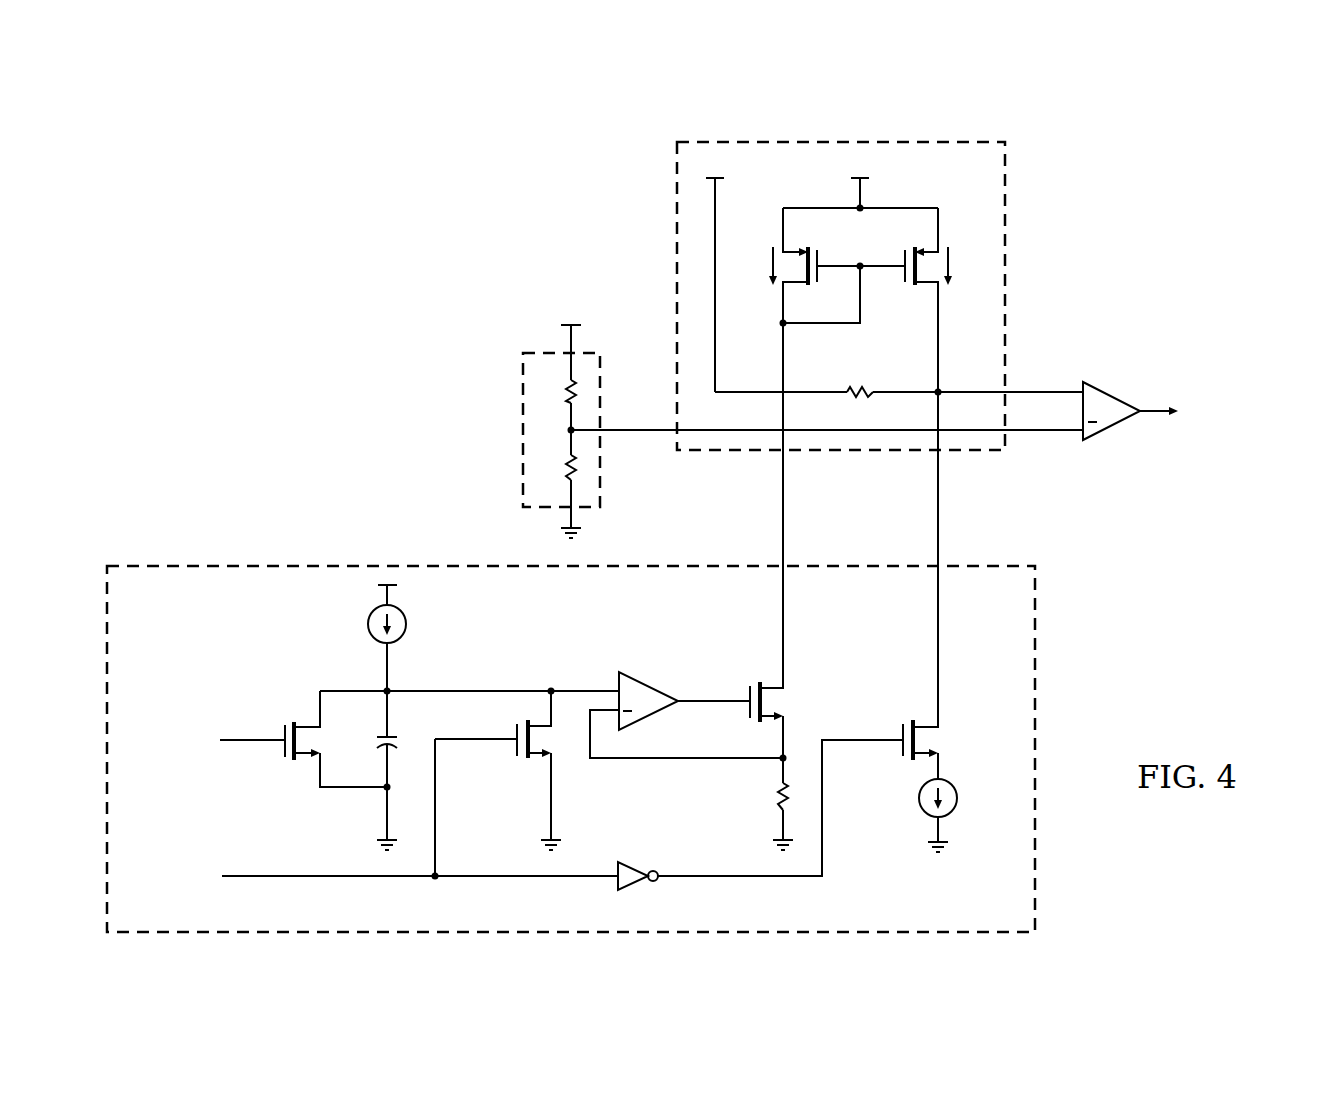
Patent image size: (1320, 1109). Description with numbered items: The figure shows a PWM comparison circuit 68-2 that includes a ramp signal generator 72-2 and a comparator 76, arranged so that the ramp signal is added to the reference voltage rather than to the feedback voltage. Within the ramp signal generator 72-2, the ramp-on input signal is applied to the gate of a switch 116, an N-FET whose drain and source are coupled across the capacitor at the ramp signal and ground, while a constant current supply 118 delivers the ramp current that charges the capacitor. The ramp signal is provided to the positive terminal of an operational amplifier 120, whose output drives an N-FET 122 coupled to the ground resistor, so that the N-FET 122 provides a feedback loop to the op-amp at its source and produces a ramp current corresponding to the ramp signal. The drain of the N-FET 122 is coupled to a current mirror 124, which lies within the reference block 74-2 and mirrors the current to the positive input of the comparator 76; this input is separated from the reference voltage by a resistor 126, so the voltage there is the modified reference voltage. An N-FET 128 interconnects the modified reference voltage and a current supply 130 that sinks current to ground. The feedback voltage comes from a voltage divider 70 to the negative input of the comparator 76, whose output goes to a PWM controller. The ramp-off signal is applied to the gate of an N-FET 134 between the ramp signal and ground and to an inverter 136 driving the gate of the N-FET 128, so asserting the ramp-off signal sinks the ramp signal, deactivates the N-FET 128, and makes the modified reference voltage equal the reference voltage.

The PWM comparison circuit 68-2 is at (326, 320).
The voltage divider 70 is at (518, 402).
The reference voltage generator 74-2 is at (884, 296).
The current mirror 124 is at (940, 195).
The resistor 126 is at (862, 388).
The comparator 76 is at (1112, 391).
The ramp signal generator 72-2 is at (335, 560).
The constant current supply 118 is at (368, 622).
The switch 116 is at (283, 746).
The N-FET 134 is at (515, 746).
The operational amplifier 120 is at (650, 683).
The N-FET 122 is at (748, 708).
The N-FET 128 is at (900, 748).
The current supply 130 is at (957, 800).
The inverter 136 is at (640, 892).